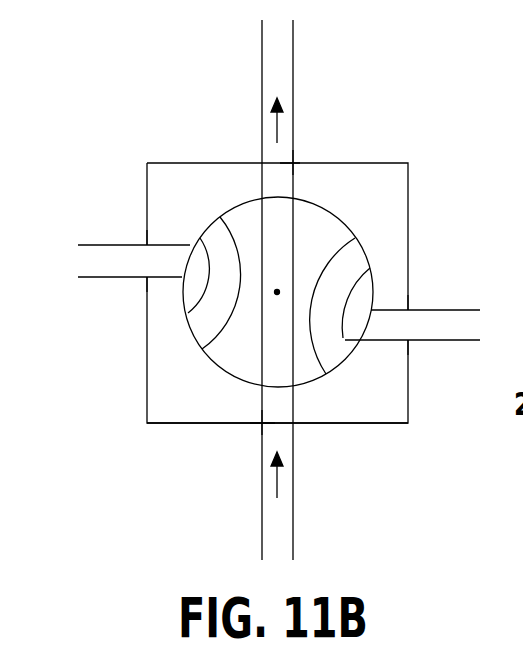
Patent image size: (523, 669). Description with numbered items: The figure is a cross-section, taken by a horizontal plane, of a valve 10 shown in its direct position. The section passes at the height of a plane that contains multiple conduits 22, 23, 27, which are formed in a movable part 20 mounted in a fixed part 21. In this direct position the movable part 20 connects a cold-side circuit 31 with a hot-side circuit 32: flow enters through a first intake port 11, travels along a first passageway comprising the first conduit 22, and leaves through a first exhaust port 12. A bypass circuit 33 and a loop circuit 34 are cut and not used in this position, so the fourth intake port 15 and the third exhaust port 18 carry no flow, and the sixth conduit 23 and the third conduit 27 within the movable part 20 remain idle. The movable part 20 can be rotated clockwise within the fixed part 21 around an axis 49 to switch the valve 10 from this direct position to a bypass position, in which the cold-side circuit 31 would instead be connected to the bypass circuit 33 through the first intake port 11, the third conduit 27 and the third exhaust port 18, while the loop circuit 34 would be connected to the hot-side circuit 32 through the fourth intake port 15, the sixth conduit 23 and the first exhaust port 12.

The valve 10 is at (128, 127).
The first intake port 11 is at (262, 425).
The first exhaust port 12 is at (293, 163).
The fourth intake port 15 is at (145, 243).
The third exhaust port 18 is at (408, 340).
The movable part 20 is at (230, 345).
The fixed part 21 is at (192, 413).
The first conduit 22 is at (275, 340).
The sixth conduit 23 is at (218, 237).
The third conduit 27 is at (327, 340).
The cold-side circuit 31 is at (277, 513).
The hot-side circuit 32 is at (277, 72).
The bypass circuit 33 is at (430, 325).
The loop circuit 34 is at (110, 260).
The axis 49 is at (277, 292).